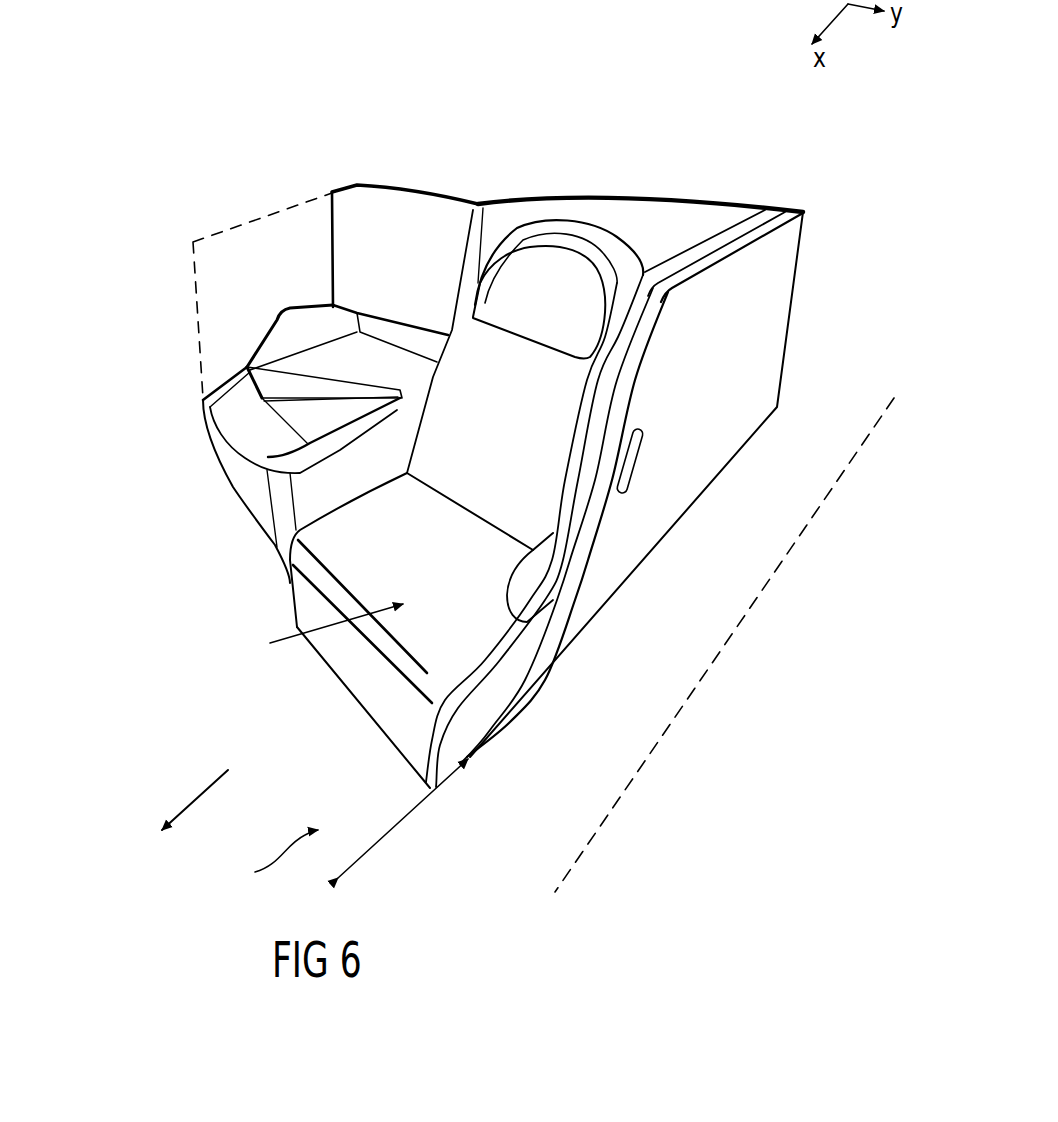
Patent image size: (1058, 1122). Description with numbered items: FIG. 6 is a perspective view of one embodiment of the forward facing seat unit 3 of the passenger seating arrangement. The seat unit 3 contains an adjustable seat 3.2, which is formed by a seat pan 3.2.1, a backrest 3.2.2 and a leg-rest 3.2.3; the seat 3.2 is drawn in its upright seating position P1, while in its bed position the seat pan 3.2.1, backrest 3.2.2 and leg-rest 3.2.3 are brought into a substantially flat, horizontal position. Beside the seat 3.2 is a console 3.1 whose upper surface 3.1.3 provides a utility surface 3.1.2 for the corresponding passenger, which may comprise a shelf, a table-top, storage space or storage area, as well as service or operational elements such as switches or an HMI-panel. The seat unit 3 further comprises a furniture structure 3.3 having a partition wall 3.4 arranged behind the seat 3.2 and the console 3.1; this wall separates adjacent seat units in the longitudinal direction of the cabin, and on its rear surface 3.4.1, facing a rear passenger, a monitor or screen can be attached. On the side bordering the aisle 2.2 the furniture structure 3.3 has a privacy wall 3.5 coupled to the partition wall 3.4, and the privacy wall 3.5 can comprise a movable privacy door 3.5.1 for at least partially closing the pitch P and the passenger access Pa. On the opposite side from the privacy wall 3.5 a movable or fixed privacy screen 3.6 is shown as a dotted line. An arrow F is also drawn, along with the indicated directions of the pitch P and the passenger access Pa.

The forward facing seat unit 3 is at (548, 140).
The console 3.1 is at (232, 405).
The utility surface 3.1.2 is at (275, 380).
The upper surface 3.1.3 is at (331, 399).
The adjustable seat 3.2 is at (375, 620).
The seat pan 3.2.1 is at (365, 575).
The backrest 3.2.2 is at (575, 380).
The leg-rest 3.2.3 is at (385, 705).
The furniture structure 3.3 is at (410, 185).
The partition wall 3.4 is at (630, 218).
The rear surface 3.4.1 is at (588, 195).
The privacy wall 3.5 is at (662, 272).
The movable privacy door 3.5.1 is at (783, 253).
The privacy screen 3.6 is at (272, 230).
The aisle 2.2 is at (822, 425).
The seating position P1 is at (518, 225).
The pitch P is at (403, 818).
The passenger access Pa is at (270, 864).
The flight direction F is at (195, 796).